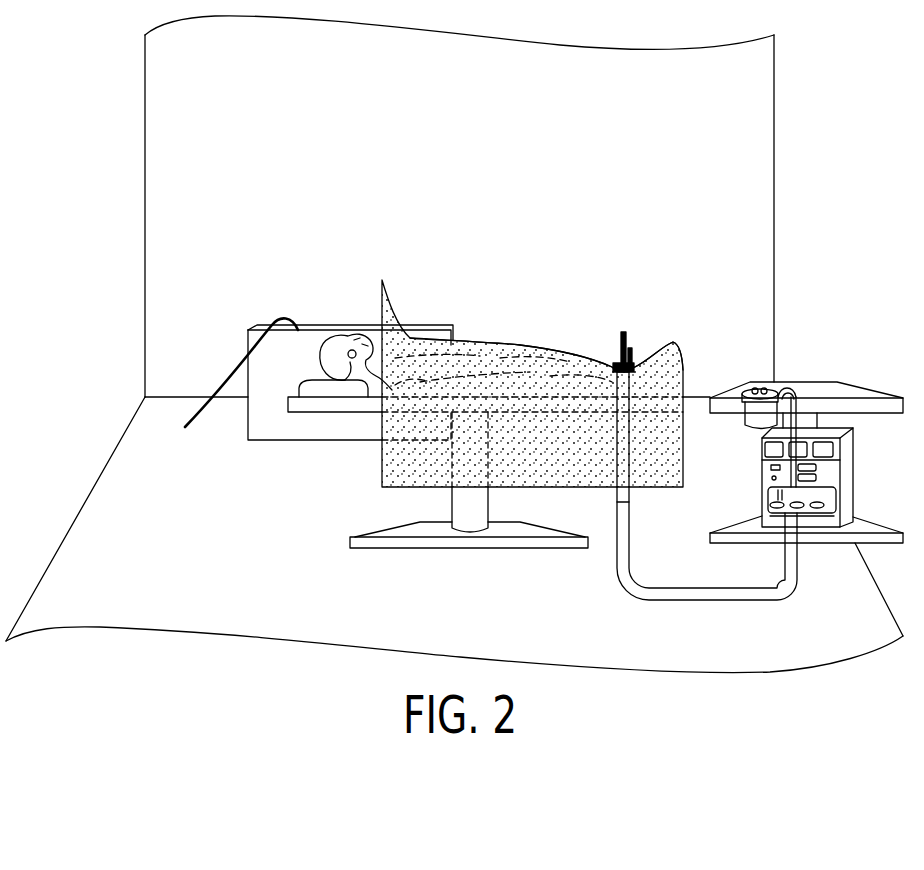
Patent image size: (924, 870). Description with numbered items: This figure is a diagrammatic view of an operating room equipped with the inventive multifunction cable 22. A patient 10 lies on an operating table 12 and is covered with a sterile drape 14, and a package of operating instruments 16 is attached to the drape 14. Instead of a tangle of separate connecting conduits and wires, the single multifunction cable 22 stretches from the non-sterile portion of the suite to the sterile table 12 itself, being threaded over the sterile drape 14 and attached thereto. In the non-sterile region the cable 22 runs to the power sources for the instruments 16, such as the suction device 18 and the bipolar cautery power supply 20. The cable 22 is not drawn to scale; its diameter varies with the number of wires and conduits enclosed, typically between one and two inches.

The patient 10 is at (357, 350).
The operating table 12 is at (426, 530).
The sterile drape 14 is at (387, 318).
The operating instruments 16 is at (633, 298).
The suction device 18 is at (730, 450).
The bipolar cautery power supply 20 is at (767, 502).
The multifunction cable 22 is at (783, 598).